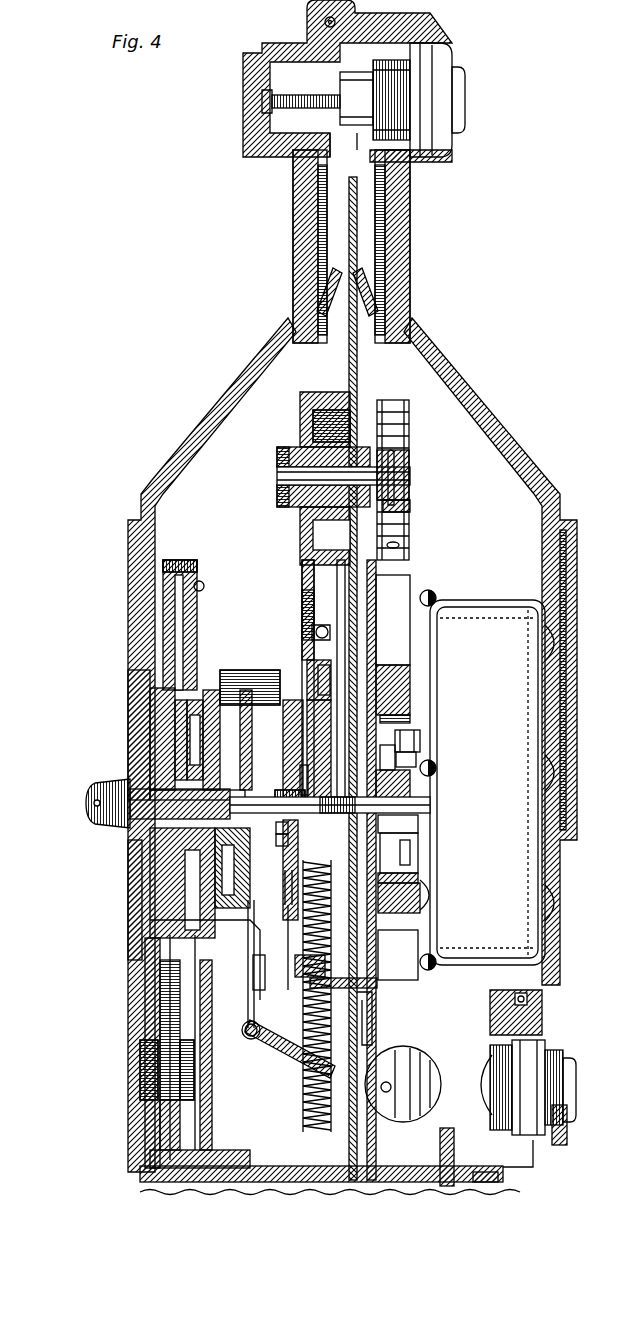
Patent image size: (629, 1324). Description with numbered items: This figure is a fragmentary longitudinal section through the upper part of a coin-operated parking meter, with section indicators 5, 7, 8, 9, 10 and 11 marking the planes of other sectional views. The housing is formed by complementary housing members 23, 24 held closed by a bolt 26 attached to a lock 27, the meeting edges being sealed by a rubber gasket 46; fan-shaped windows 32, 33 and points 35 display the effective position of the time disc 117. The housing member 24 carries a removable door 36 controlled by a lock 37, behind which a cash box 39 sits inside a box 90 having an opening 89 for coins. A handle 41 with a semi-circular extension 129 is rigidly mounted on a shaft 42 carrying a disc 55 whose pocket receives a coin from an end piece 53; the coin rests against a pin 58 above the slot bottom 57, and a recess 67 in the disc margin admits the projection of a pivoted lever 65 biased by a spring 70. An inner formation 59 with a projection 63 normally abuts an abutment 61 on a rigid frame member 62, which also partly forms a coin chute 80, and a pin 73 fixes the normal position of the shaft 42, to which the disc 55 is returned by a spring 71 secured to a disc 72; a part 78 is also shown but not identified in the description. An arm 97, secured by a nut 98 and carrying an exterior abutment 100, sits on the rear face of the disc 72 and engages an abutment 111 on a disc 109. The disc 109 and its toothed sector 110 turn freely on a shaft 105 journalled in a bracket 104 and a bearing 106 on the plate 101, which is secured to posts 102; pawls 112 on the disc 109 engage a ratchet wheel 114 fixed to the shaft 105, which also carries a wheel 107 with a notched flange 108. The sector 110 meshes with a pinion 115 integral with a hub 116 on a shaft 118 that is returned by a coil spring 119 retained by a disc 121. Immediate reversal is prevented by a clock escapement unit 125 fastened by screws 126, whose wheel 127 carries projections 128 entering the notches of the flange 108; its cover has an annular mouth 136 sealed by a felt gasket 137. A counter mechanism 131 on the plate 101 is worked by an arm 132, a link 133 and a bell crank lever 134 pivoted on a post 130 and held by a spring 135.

The section line 5 is at (503, 1178).
The section line 7 is at (348, 55).
The section line 8 is at (330, 342).
The section line 9 is at (355, 398).
The section line 10 is at (405, 558).
The section line 11 is at (168, 542).
The housing member 23 is at (176, 450).
The housing member 24 is at (533, 456).
The bolt 26 is at (262, 101).
The lock 27 is at (460, 80).
The window 32 is at (297, 218).
The window 33 is at (407, 215).
The points 35 is at (328, 283).
The removable door 36 is at (563, 996).
The lock 37 is at (578, 1037).
The cash box 39 is at (418, 1170).
The handle 41 is at (97, 797).
The shaft 42 is at (312, 775).
The rubber gasket 46 is at (337, 21).
The end piece 53 is at (176, 630).
The disc member 55 is at (183, 871).
The bottom of slot 57 is at (176, 742).
The pin 58 is at (176, 711).
The formation 59 is at (170, 764).
The abutment 61 is at (190, 860).
The frame member 62 is at (177, 920).
The projection 63 is at (255, 742).
The pivoted lever 65 is at (205, 730).
The recess 67 is at (173, 692).
The spring 70 is at (150, 1088).
The spring 71 is at (265, 712).
The disc 72 is at (318, 672).
The pin 73 is at (313, 663).
The support block 78 is at (163, 689).
The coin chute 80 is at (158, 1054).
The opening 89 is at (157, 1183).
The box 90 is at (480, 1173).
The arm 97 is at (281, 833).
The nut 98 is at (281, 821).
The exterior abutment 100 is at (285, 885).
The plate 101 is at (378, 1029).
The posts 102 is at (201, 672).
The bracket 104 is at (300, 978).
The shaft 105 is at (377, 800).
The bearing 106 is at (398, 827).
The wheel 107 is at (408, 840).
The notched flange 108 is at (412, 867).
The disc 109 is at (312, 760).
The sector 110 is at (305, 585).
The abutment 111 is at (280, 805).
The pawls 112 is at (312, 627).
The ratchet wheel 114 is at (386, 900).
The pinion 115 is at (305, 390).
The hub 116 is at (302, 416).
The time disc 117 is at (358, 374).
The shaft 118 is at (401, 473).
The coil spring 119 is at (389, 437).
The disc 121 is at (411, 503).
The clock escapement unit 125 is at (487, 938).
The screws 126 is at (434, 597).
The wheel 127 is at (420, 758).
The projections 128 is at (423, 728).
The semi-circular extension 129 is at (140, 897).
The post 130 is at (262, 990).
The counter mechanism 131 is at (405, 1076).
The arm 132 is at (299, 1079).
The link 133 is at (258, 1042).
The bell crank lever 134 is at (258, 1019).
The spring 135 is at (378, 1012).
The annular mouth 136 is at (417, 708).
The felt gasket 137 is at (408, 683).